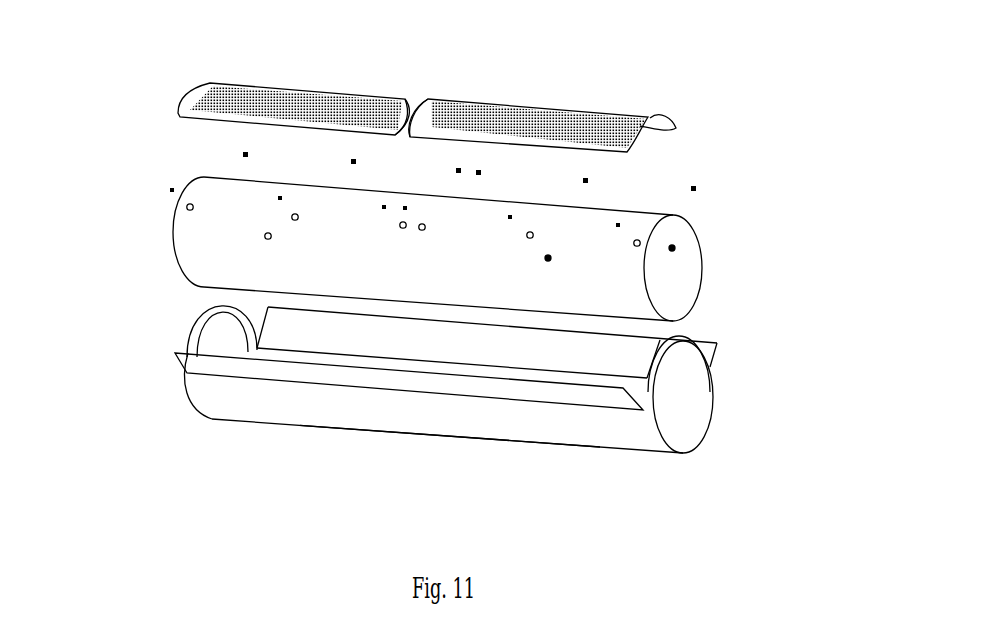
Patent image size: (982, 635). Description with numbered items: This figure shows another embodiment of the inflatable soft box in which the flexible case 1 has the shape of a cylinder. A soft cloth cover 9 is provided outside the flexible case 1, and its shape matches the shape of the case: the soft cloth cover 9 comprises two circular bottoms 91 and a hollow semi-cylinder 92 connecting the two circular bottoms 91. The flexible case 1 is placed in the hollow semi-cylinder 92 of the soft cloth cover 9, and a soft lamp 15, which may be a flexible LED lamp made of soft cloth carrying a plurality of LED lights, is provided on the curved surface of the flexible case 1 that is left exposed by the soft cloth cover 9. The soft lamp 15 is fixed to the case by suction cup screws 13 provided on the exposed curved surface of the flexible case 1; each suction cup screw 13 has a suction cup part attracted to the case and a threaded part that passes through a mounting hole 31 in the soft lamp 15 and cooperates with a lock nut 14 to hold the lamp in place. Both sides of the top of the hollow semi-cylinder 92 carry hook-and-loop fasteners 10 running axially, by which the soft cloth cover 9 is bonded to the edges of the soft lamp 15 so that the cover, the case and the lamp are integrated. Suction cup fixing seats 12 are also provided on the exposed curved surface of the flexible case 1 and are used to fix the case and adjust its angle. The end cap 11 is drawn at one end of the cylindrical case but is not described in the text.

The flexible case 1 is at (203, 195).
The soft cloth cover 9 is at (692, 449).
The hook-and-loop fasteners 10 is at (717, 343).
The end cap 11 is at (676, 248).
The suction cup fixing seat 12 is at (265, 237).
The suction cup screw 13 is at (636, 240).
The lock nut 14 is at (696, 188).
The soft lamp 15 is at (336, 88).
The mounting hole 31 is at (676, 127).
The circular bottoms 91 is at (192, 335).
The hollow semi-cylinder 92 is at (412, 428).